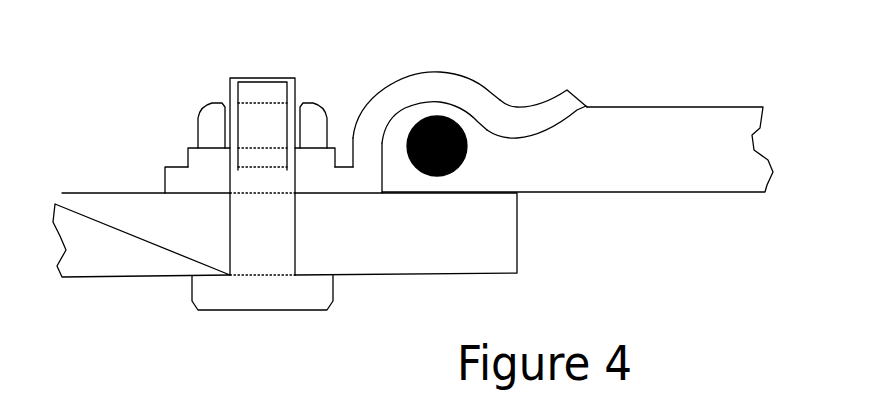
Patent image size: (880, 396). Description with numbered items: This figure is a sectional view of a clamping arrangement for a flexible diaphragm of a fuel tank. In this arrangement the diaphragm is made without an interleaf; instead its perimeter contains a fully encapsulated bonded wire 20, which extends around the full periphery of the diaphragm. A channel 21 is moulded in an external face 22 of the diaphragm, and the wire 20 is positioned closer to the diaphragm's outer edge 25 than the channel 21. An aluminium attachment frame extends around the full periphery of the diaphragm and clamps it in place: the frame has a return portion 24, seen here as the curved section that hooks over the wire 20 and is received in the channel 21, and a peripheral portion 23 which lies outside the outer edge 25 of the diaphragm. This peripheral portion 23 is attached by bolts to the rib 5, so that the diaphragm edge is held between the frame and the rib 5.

The rib 5 is at (127, 258).
The bonded wire 20 is at (437, 177).
The channel 21 is at (521, 136).
The external face 22 is at (627, 107).
The peripheral portion 23 is at (163, 175).
The return portion 24 is at (410, 97).
The outer edge 25 is at (380, 178).